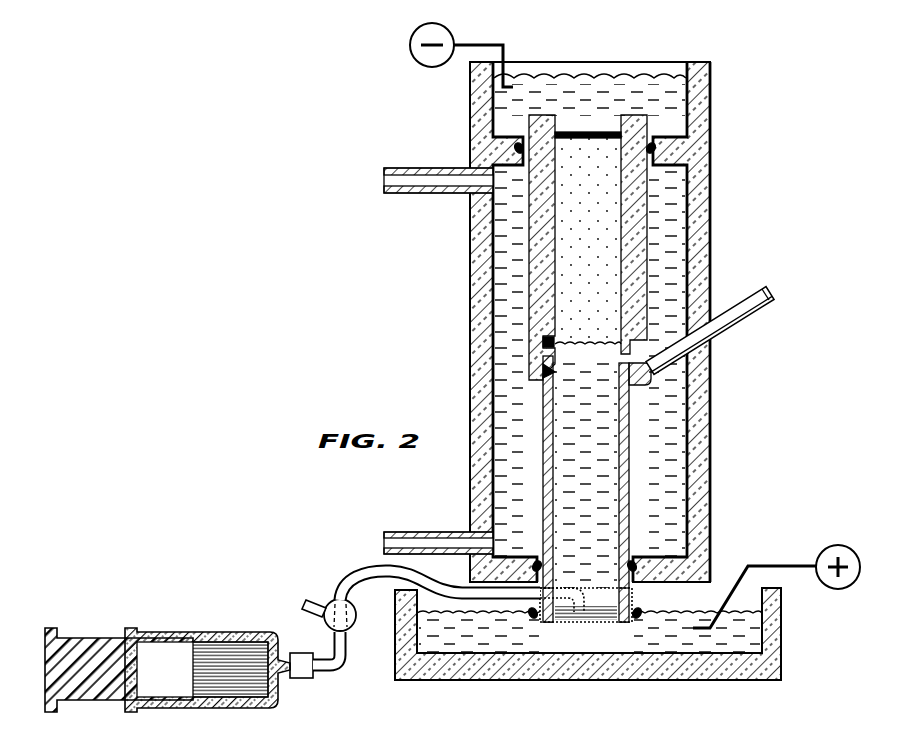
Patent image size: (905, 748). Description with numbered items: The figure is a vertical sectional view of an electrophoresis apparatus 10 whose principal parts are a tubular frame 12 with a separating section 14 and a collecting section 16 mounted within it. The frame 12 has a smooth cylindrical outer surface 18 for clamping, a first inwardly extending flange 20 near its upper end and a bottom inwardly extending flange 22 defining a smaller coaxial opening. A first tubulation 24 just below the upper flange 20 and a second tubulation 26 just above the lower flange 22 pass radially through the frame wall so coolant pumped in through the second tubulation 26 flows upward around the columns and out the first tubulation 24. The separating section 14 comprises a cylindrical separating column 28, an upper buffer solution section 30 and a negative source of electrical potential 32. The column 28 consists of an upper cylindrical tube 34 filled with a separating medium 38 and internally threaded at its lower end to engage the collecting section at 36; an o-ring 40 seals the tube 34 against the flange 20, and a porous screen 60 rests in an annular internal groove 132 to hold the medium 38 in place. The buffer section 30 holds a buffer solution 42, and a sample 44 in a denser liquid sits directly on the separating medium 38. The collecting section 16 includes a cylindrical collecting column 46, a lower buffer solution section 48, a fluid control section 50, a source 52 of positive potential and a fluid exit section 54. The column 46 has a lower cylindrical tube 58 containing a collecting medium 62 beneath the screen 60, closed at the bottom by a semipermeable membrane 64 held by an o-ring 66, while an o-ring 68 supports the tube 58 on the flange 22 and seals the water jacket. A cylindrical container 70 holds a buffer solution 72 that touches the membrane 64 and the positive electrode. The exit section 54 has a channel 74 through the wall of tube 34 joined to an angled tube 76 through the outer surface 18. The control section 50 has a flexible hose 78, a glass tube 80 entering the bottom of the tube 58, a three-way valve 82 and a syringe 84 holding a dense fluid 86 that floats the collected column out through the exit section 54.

The electrophoresis apparatus 10 is at (396, 313).
The tubular frame 12 is at (475, 372).
The separating section 14 is at (570, 232).
The collecting section 16 is at (575, 475).
The cylindrical outer surface 18 is at (710, 285).
The first inwardly extending flange 20 is at (512, 137).
The bottom inwardly extending flange 22 is at (520, 558).
The first tubulation 24 is at (432, 170).
The second tubulation 26 is at (425, 530).
The cylindrical separating column 28 is at (520, 250).
The upper buffer solution section 30 is at (600, 54).
The source of electrical potential 32 is at (465, 43).
The upper cylindrical tube 34 is at (530, 310).
The threaded engagement 36 is at (555, 372).
The separating medium 38 is at (557, 205).
The o-ring 40 is at (655, 145).
The buffer solution 42 is at (550, 88).
The sample 44 is at (580, 130).
The cylindrical collecting column 46 is at (537, 445).
The lower buffer solution section 48 is at (713, 576).
The fluid control section 50 is at (272, 608).
The source of positive potential 52 is at (770, 567).
The fluid exit section 54 is at (750, 292).
The lower cylindrical tube 58 is at (545, 497).
The porous screen 60 is at (585, 340).
The collecting medium 62 is at (557, 428).
The semipermeable membrane 64 is at (530, 620).
The o-ring 66 is at (645, 613).
The o-ring 68 is at (632, 560).
The cylindrical container 70 is at (782, 630).
The buffer solution 72 is at (746, 612).
The channel 74 is at (648, 370).
The tube 76 is at (750, 310).
The flexible hose 78 is at (352, 580).
The glass tube 80 is at (590, 625).
The three-way valve 82 is at (330, 605).
The syringe 84 is at (183, 635).
The dense fluid 86 is at (225, 648).
The annular internal groove 132 is at (543, 342).